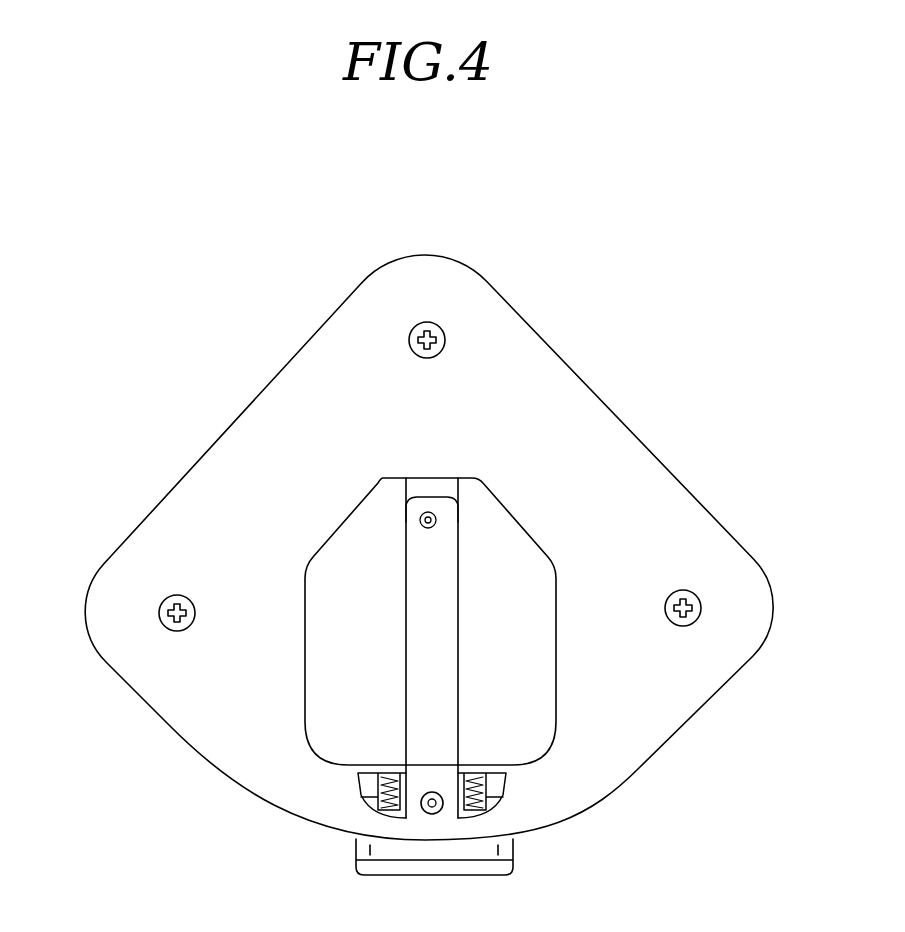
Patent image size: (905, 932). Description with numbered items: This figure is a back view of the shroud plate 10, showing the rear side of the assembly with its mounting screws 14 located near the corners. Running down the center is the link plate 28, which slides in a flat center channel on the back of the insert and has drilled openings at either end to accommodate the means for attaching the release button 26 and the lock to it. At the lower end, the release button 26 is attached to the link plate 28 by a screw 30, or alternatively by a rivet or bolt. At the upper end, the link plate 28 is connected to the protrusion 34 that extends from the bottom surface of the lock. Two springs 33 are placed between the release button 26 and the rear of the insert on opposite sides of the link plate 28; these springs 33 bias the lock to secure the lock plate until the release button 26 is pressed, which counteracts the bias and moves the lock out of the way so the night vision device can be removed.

The mounting assembly 10 is at (206, 383).
The mounting screws 14 is at (432, 352).
The release button 26 is at (396, 854).
The link plate 28 is at (420, 640).
The screw 30 is at (438, 806).
The springs 33 is at (395, 782).
The protrusion 34 is at (437, 520).